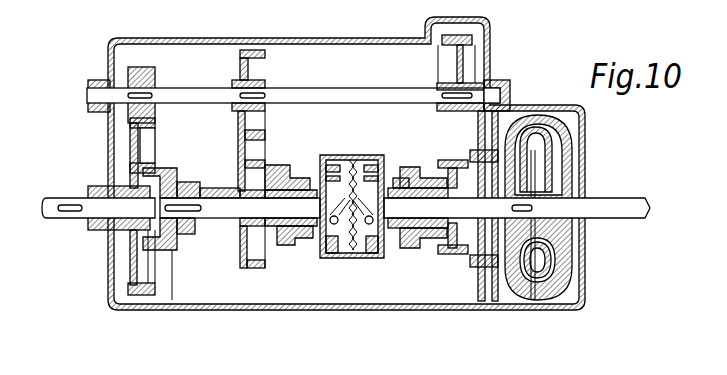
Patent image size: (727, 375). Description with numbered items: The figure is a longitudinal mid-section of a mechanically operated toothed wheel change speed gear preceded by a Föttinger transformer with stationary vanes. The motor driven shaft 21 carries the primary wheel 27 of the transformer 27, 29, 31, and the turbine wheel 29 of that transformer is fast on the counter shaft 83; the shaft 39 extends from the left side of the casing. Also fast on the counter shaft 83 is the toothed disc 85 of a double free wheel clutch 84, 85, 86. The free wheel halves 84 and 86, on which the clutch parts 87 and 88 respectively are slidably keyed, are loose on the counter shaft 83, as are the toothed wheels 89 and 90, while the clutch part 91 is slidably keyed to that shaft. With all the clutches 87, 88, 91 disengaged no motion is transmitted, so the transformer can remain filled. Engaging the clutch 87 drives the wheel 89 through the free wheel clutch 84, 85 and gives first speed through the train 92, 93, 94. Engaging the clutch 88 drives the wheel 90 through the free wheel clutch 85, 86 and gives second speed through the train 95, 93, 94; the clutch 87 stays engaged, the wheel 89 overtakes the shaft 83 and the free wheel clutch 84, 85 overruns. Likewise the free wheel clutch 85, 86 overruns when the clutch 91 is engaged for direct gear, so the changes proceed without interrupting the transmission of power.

The motor driven shaft 21 is at (623, 210).
The primary wheel 27 is at (527, 237).
The turbine wheel 29 is at (552, 295).
The stationary vanes 31 is at (552, 245).
The drive shaft 39 is at (85, 213).
The counter shaft 83 is at (397, 185).
The free wheel half 84 is at (390, 258).
The toothed disc 85 is at (360, 257).
The free wheel half 86 is at (327, 252).
The clutch part 87 is at (433, 248).
The clutch part 88 is at (287, 247).
The toothed wheel 89 is at (484, 300).
The toothed wheel 90 is at (263, 255).
The clutch part 91 is at (172, 232).
The toothed wheel 92 is at (458, 148).
The toothed wheel 93 is at (147, 77).
The toothed wheel 94 is at (137, 292).
The toothed wheel 95 is at (237, 114).